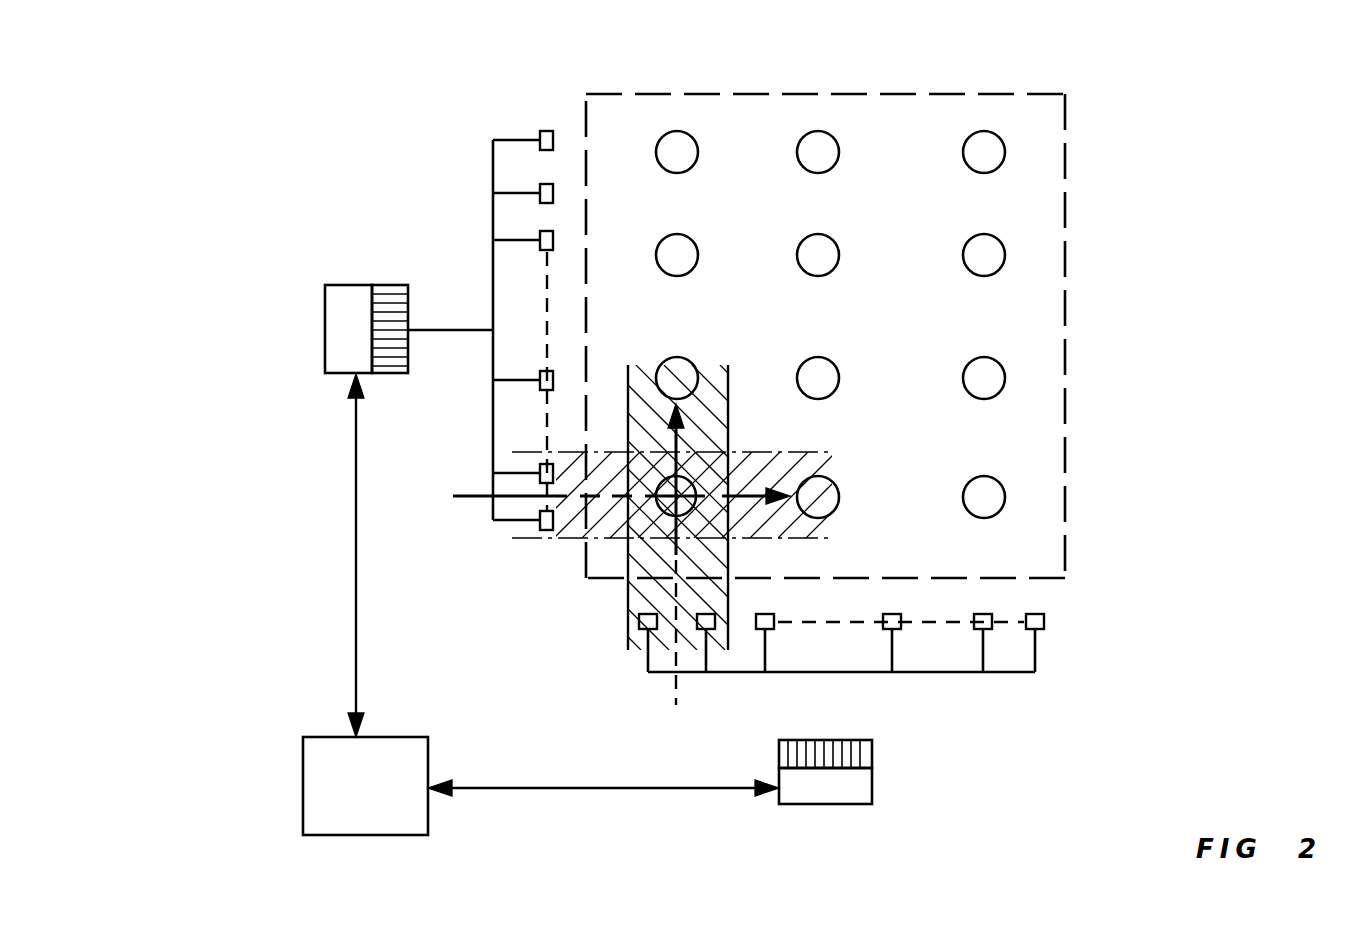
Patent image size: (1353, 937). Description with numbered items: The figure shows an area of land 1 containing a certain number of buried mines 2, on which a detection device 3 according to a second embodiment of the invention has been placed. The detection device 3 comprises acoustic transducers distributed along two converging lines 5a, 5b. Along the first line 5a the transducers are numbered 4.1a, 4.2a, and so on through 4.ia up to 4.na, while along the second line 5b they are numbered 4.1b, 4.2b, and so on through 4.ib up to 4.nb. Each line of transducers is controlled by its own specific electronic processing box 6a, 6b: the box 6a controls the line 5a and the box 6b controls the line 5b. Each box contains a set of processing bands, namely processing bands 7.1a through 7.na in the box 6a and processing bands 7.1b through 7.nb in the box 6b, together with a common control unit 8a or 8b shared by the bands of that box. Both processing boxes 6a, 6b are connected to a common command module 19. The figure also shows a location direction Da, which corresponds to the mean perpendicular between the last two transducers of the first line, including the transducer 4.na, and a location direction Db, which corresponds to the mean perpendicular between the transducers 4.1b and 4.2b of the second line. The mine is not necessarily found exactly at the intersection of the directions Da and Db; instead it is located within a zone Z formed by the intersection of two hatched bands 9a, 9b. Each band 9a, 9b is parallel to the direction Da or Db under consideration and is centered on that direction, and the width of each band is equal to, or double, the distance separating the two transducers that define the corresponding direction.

The area of land 1 is at (1038, 278).
The mines 2 is at (680, 142).
The detection device 3 is at (298, 157).
The transducer 4.1a is at (549, 131).
The transducer 4.2a is at (545, 186).
The transducer 4.ia is at (538, 380).
The transducer 4.na is at (541, 523).
The transducer 4.1b is at (648, 632).
The transducer 4.2b is at (708, 632).
The transducer 4.ib is at (896, 632).
The transducer 4.nb is at (1040, 620).
The line 5a is at (545, 298).
The line 5b is at (935, 625).
The electronic processing box 6a is at (302, 324).
The electronic processing box 6b is at (845, 814).
The processing band 7.1a is at (392, 296).
The processing band 7.na is at (390, 376).
The processing band 7.1b is at (782, 752).
The processing band 7.nb is at (866, 752).
The common control unit 8a is at (345, 300).
The common control unit 8b is at (832, 786).
The band 9a is at (783, 520).
The band 9b is at (648, 413).
The common command module 19 is at (322, 776).
The location direction Da is at (752, 490).
The location direction Db is at (685, 433).
The zone Z is at (632, 540).